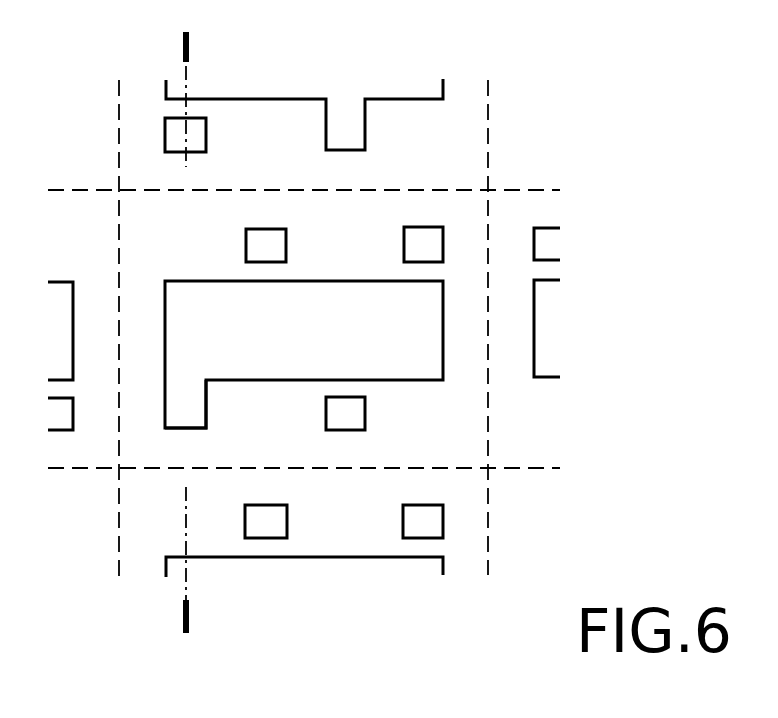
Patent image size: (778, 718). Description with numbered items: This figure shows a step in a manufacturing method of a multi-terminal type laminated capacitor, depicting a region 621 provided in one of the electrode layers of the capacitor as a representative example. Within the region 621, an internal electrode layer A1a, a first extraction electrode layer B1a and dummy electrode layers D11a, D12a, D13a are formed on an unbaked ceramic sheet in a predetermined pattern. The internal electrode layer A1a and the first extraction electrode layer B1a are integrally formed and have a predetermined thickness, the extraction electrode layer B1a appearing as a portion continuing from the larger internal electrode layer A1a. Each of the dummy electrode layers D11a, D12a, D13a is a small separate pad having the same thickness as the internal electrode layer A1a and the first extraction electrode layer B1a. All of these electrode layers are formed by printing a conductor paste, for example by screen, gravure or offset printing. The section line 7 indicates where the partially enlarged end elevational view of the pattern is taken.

The section line 7- 7 is at (182, 47).
The region 621 is at (150, 242).
The internal electrode layer A1a is at (430, 325).
The first extraction electrode layer B1a is at (198, 410).
The dummy electrode layer D11a is at (365, 412).
The dummy electrode layer D12a is at (417, 247).
The dummy electrode layer D13a is at (276, 236).